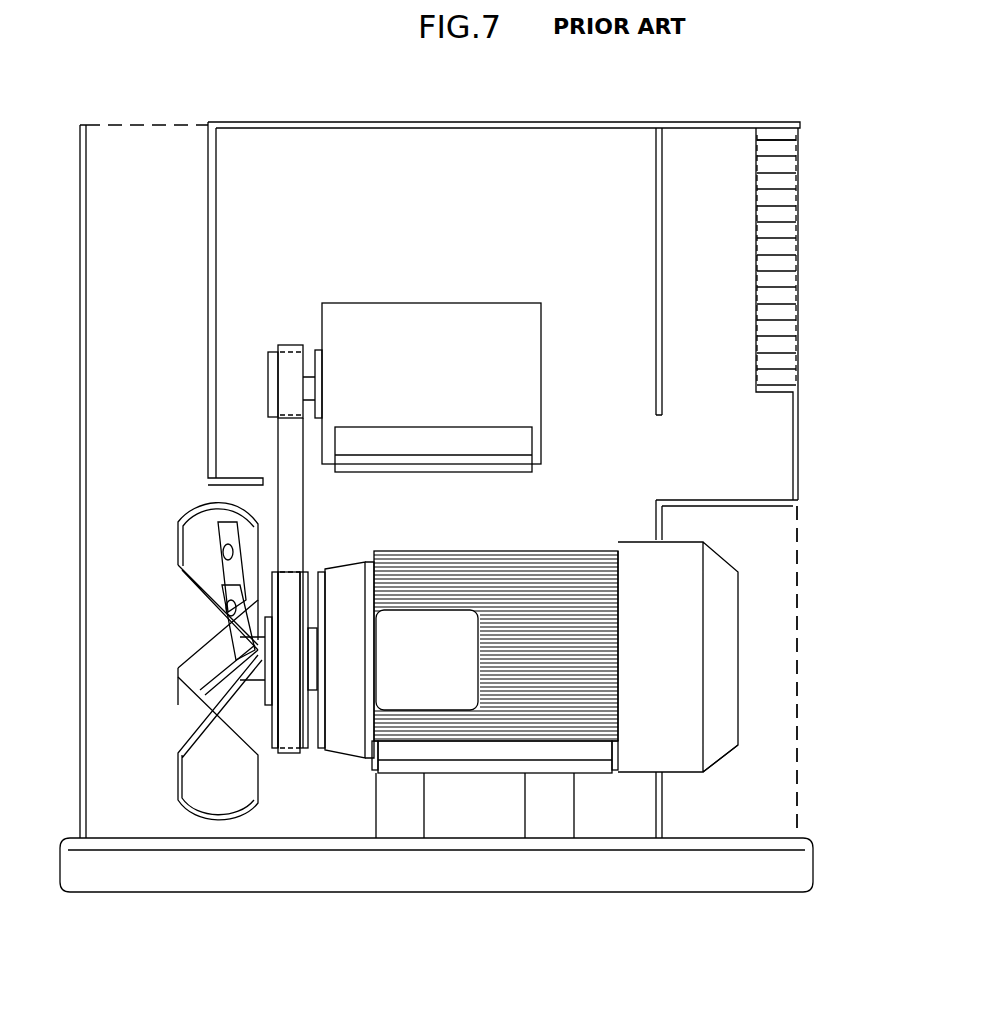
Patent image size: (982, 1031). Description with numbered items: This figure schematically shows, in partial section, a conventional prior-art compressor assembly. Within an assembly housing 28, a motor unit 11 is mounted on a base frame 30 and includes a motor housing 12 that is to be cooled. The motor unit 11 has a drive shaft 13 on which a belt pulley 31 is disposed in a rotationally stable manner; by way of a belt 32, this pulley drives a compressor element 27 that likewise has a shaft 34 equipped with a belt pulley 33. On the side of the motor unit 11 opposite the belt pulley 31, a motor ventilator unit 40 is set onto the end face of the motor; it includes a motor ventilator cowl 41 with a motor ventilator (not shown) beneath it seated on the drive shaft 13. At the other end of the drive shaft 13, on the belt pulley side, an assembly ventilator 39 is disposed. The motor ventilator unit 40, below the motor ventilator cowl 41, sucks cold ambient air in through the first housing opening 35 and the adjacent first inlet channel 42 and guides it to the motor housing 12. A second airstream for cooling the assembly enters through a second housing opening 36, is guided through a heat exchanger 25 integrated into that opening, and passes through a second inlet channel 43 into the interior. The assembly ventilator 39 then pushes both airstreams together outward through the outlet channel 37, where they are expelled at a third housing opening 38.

The motor unit 11 is at (453, 550).
The motor housing 12 is at (582, 550).
The drive shaft 13 is at (256, 692).
The heat exchanger 25 is at (762, 238).
The compressor element 27 is at (493, 354).
The assembly housing 28 is at (80, 495).
The base frame 30 is at (484, 892).
The belt pulley 31 is at (308, 572).
The belt 32 is at (304, 487).
The belt pulley 33 is at (270, 366).
The shaft 34 is at (312, 378).
The first housing opening 35 is at (803, 565).
The second housing opening 36 is at (802, 250).
The outlet channel 37 is at (160, 278).
The third housing opening 38 is at (146, 122).
The assembly ventilator 39 is at (178, 508).
The motor ventilator unit 40 is at (704, 775).
The motor ventilator cowl 41 is at (718, 568).
The first inlet channel 42 is at (788, 691).
The second inlet channel 43 is at (722, 358).